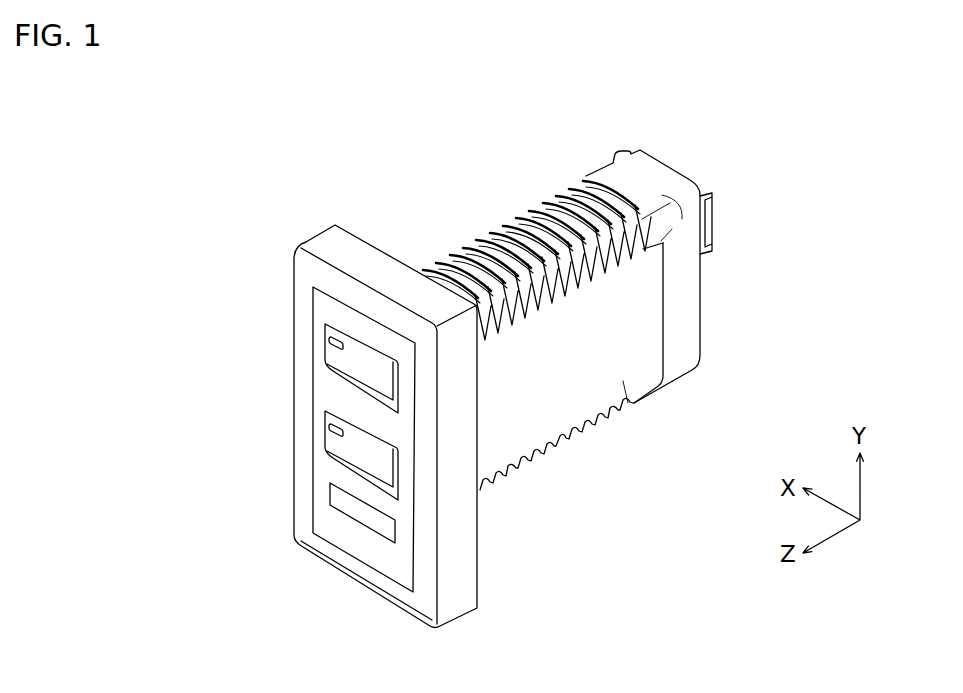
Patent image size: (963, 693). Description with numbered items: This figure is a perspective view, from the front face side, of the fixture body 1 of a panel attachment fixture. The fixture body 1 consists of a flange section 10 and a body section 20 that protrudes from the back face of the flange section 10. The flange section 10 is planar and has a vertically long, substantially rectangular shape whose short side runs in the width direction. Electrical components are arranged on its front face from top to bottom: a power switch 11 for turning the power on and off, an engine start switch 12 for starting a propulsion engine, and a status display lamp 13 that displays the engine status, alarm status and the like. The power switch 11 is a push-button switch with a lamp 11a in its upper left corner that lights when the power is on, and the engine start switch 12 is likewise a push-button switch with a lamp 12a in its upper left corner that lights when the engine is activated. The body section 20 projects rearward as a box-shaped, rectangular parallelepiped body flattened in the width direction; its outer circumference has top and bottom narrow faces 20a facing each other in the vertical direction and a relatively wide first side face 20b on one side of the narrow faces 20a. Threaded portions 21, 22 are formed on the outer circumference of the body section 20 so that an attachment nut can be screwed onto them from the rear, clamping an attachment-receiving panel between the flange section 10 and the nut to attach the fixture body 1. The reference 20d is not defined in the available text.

The fixture body 1 is at (364, 141).
The flange section 10 is at (313, 228).
The power switch 11 is at (385, 385).
The lamp 11a is at (327, 342).
The engine start switch 12 is at (385, 471).
The lamp 12a is at (327, 427).
The status display lamp 13 is at (387, 530).
The body section 20 is at (589, 160).
The narrow faces 20a is at (531, 335).
The first side face 20b is at (638, 406).
The slits between fins 20d is at (563, 272).
The threaded portion 21 is at (492, 228).
The threaded portion 22 is at (553, 288).